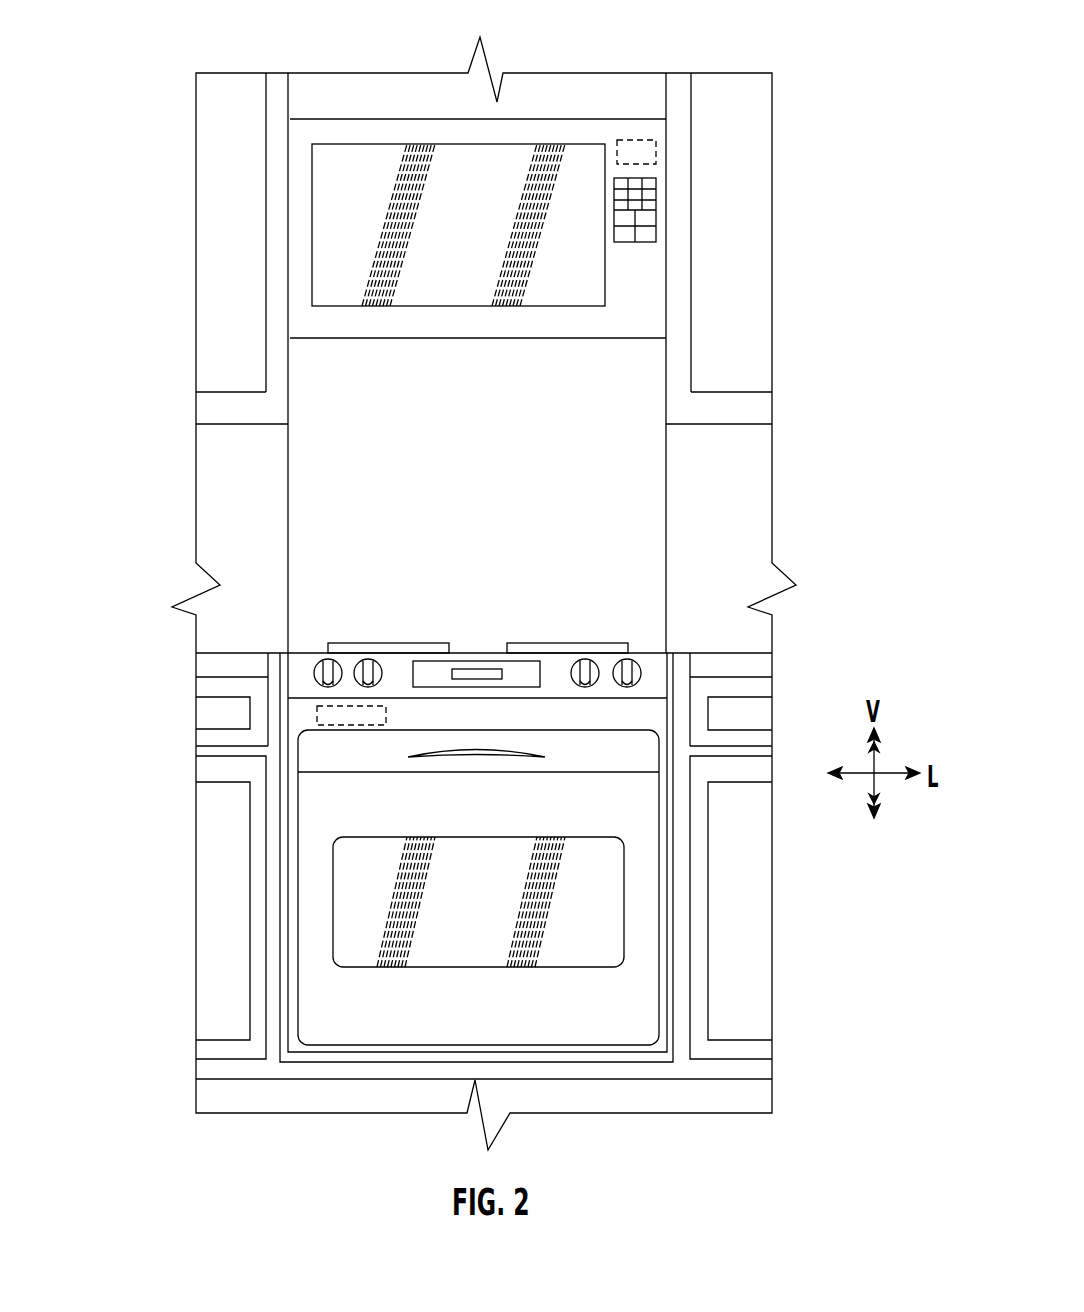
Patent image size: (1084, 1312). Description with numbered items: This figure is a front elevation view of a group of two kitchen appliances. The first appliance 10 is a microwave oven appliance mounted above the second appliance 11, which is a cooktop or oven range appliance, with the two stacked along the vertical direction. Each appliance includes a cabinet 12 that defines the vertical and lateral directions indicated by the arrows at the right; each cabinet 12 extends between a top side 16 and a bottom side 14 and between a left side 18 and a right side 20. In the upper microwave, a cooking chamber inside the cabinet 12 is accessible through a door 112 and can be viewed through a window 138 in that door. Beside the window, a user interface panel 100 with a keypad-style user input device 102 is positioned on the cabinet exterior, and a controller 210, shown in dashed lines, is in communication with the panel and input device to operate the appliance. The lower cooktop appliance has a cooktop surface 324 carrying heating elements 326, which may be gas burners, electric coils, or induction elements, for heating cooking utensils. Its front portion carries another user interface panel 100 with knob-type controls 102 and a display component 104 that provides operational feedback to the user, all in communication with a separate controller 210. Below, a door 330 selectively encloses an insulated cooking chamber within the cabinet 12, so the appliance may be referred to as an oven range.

The first appliance 10 is at (146, 46).
The second appliance 11 is at (278, 845).
The cabinet 12 is at (650, 327).
The bottom side 14 is at (540, 340).
The top side 16 is at (393, 116).
The left side 18 is at (286, 258).
The right side 20 is at (672, 268).
The user interface panel 100 is at (650, 311).
The user input device 102 is at (656, 212).
The display component 104 is at (413, 666).
The door 112 is at (636, 130).
The window 138 is at (339, 219).
The controller 210 is at (656, 150).
The cooktop surface 324 is at (301, 647).
The heating elements 326 is at (523, 645).
The door 330 is at (643, 918).